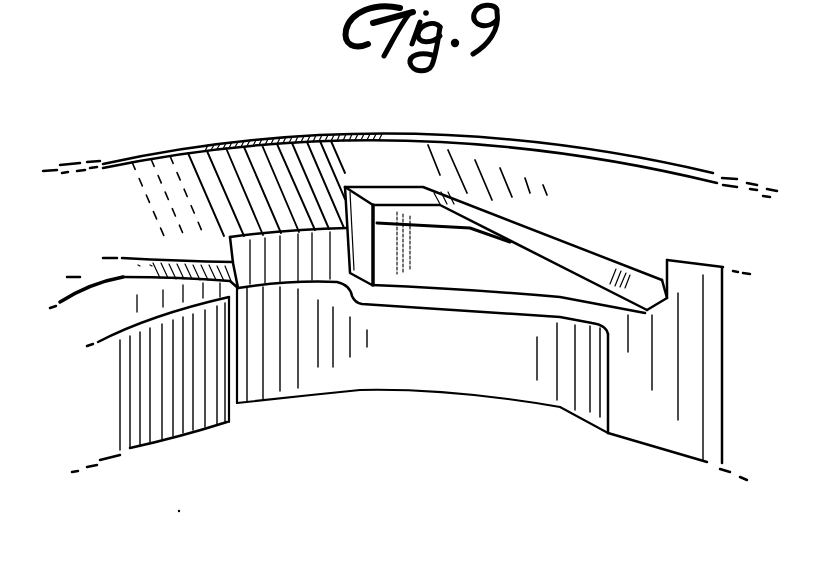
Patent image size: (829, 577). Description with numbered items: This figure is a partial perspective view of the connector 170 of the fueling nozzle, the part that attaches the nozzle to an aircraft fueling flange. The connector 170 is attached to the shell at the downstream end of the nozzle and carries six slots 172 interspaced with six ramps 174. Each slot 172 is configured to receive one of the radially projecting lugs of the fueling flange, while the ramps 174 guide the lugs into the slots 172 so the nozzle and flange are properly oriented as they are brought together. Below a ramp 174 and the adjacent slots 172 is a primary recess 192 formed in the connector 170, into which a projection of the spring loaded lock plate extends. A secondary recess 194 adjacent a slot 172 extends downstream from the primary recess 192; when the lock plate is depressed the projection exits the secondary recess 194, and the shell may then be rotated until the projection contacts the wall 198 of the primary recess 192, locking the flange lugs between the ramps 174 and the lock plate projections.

The connector 170 is at (658, 415).
The slot 172 is at (303, 262).
The ramp 174 is at (508, 262).
The primary recess 192 is at (430, 375).
The secondary recess 194 is at (267, 287).
The wall of the primary recess 198 is at (608, 388).